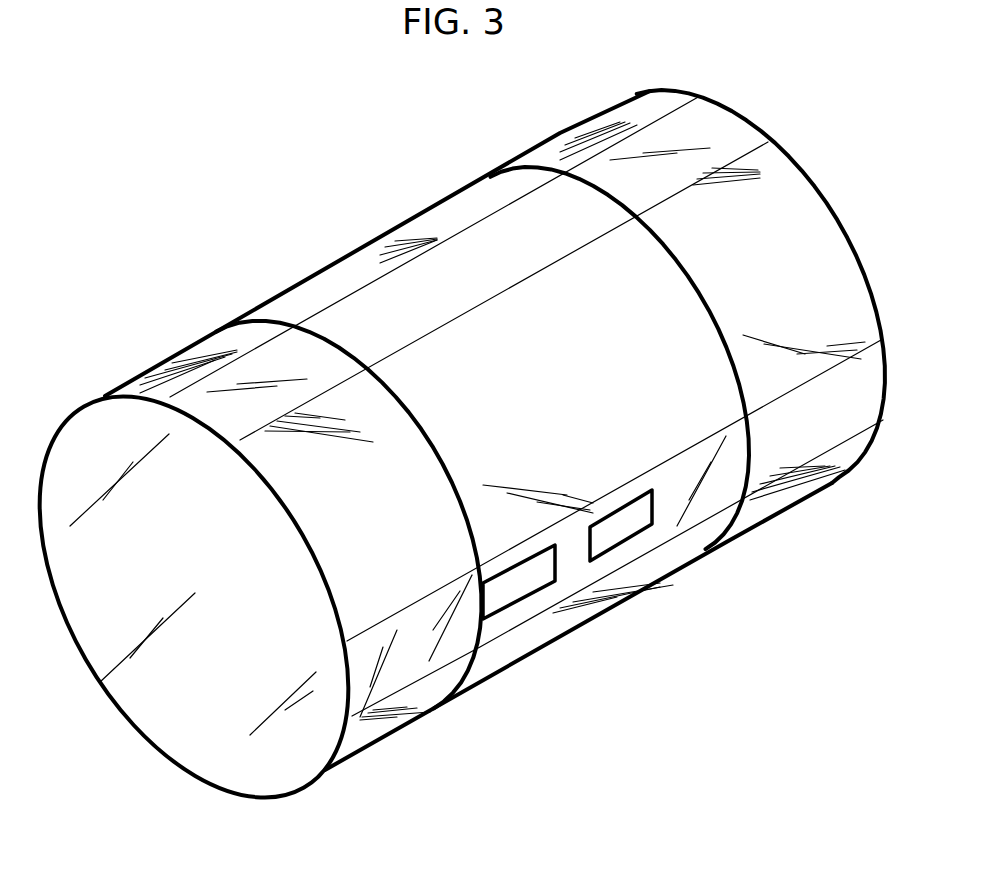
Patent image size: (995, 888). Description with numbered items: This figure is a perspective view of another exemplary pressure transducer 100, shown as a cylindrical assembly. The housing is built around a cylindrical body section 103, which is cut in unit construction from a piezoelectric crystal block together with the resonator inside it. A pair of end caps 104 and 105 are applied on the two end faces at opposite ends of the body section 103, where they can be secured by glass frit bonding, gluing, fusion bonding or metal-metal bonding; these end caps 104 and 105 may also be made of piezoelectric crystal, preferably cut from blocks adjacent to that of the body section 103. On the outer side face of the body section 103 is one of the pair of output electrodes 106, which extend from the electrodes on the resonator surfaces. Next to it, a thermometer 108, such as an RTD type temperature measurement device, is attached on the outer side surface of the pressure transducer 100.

The pressure transducer 100 is at (314, 271).
The cylindrical body section 103 is at (564, 469).
The end cap 104 is at (373, 745).
The end cap 105 is at (795, 507).
The output electrodes 106 is at (532, 578).
The thermometer 108 is at (625, 527).